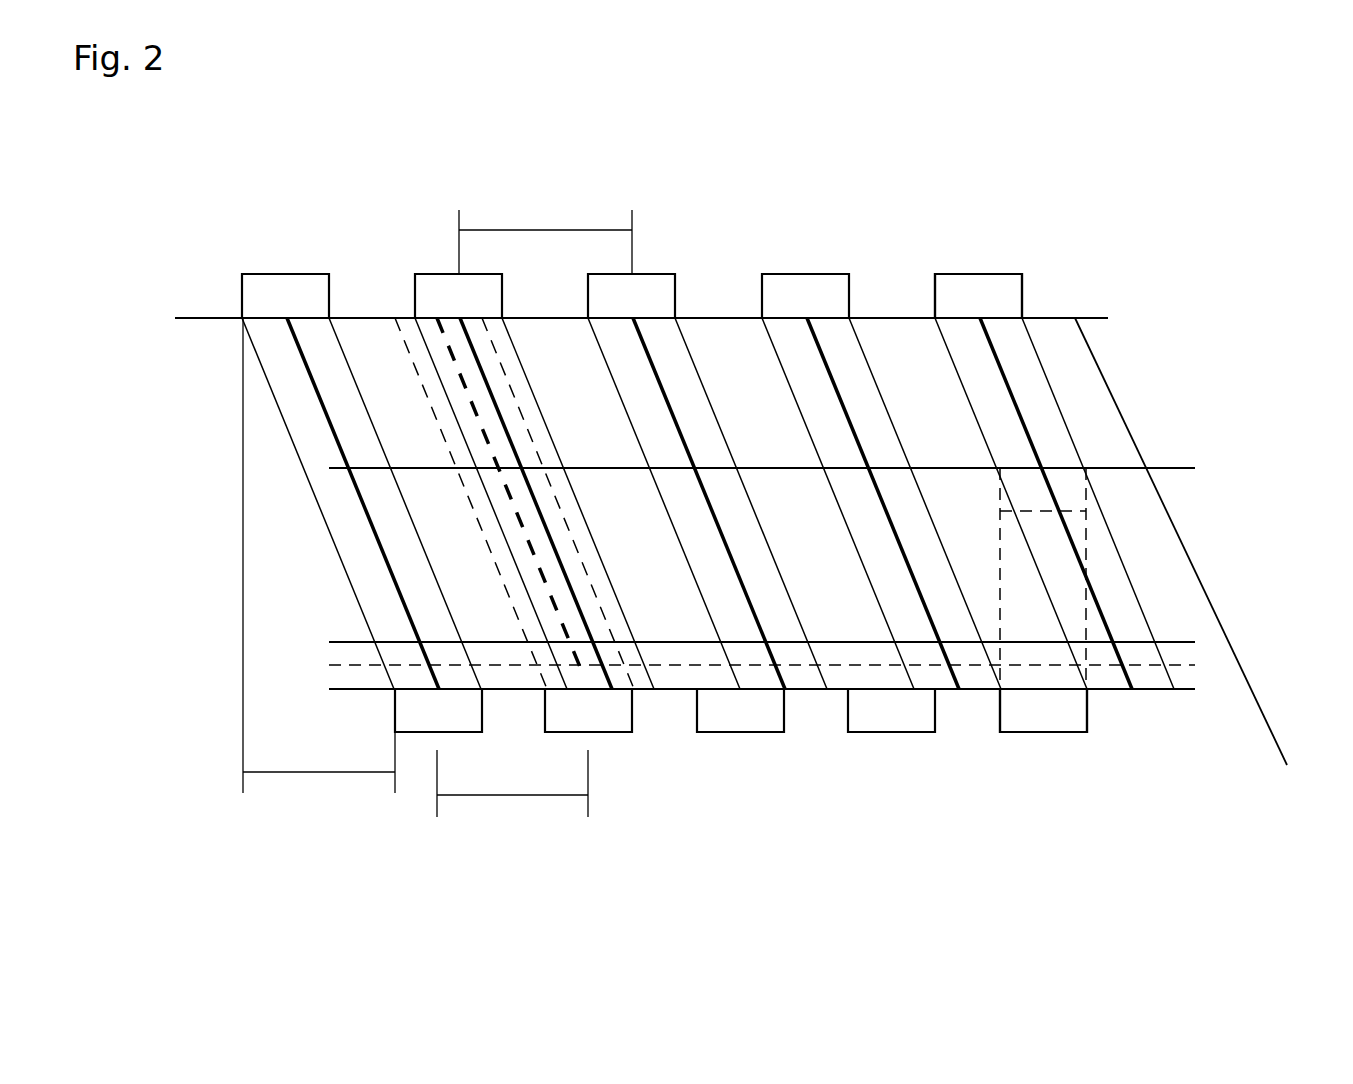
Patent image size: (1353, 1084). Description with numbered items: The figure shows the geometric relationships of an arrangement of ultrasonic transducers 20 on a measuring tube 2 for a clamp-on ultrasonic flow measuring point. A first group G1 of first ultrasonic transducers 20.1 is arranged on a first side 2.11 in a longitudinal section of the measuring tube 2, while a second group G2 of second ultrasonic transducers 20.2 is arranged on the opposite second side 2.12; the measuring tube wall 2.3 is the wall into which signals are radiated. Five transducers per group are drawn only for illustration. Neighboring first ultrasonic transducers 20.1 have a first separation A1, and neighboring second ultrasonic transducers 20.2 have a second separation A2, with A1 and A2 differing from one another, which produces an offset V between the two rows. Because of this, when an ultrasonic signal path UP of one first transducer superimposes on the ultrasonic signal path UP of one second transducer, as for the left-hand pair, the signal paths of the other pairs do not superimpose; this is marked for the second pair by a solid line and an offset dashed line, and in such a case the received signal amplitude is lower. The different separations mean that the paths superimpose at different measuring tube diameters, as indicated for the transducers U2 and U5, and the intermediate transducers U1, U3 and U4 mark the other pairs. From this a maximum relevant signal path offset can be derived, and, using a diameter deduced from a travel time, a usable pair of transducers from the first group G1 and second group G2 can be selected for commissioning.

The measuring tube 2 is at (1065, 315).
The first side 2.11 is at (1130, 295).
The second side 2.12 is at (1173, 730).
The measuring tube wall 2.3 is at (1182, 688).
The ultrasonic transducers 20 is at (647, 522).
The first ultrasonic transducers 20.1 is at (437, 253).
The second ultrasonic transducers 20.2 is at (567, 750).
The first group G1 is at (892, 253).
The second group G2 is at (870, 837).
The first separation A1 is at (545, 229).
The second separation A2 is at (512, 797).
The offset V is at (319, 572).
The ultrasonic signal path UP is at (552, 557).
The first transition region U1 is at (475, 738).
The ultrasonic transducer U2 is at (583, 687).
The third transition region U3 is at (737, 767).
The fourth transition region U4 is at (920, 738).
The ultrasonic transducer U5 is at (1023, 502).